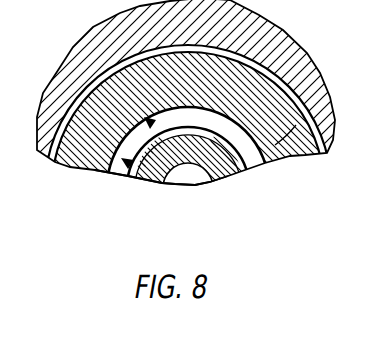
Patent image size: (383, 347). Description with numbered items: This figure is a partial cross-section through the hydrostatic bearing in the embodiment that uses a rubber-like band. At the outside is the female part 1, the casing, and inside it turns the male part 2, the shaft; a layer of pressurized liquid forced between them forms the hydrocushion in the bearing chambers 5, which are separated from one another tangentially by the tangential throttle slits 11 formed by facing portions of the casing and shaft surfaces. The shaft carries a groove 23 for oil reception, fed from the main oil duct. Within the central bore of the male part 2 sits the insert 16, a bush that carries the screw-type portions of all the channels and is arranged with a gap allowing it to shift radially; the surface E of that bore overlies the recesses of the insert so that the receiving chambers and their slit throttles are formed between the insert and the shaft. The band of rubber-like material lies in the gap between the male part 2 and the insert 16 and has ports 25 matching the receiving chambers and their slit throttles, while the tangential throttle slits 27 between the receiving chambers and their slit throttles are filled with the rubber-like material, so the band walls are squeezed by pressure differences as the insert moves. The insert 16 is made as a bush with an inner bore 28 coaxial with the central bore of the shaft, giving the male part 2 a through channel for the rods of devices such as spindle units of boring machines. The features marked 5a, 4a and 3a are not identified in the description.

The female part 1 is at (264, 26).
The bearing chambers 5 is at (320, 92).
The housing wall surface 5a is at (203, 55).
The tangential throttle slits 11 is at (123, 60).
The tangential throttle slits 27 is at (150, 118).
The bearing outer race 4a is at (229, 118).
The ports 25 is at (199, 118).
The groove 23 is at (254, 154).
The inner bore 28 is at (192, 165).
The shaft bore 3a is at (218, 172).
The insert 16 is at (159, 180).
The surface of the male part E is at (140, 172).
The male part 2 is at (289, 152).